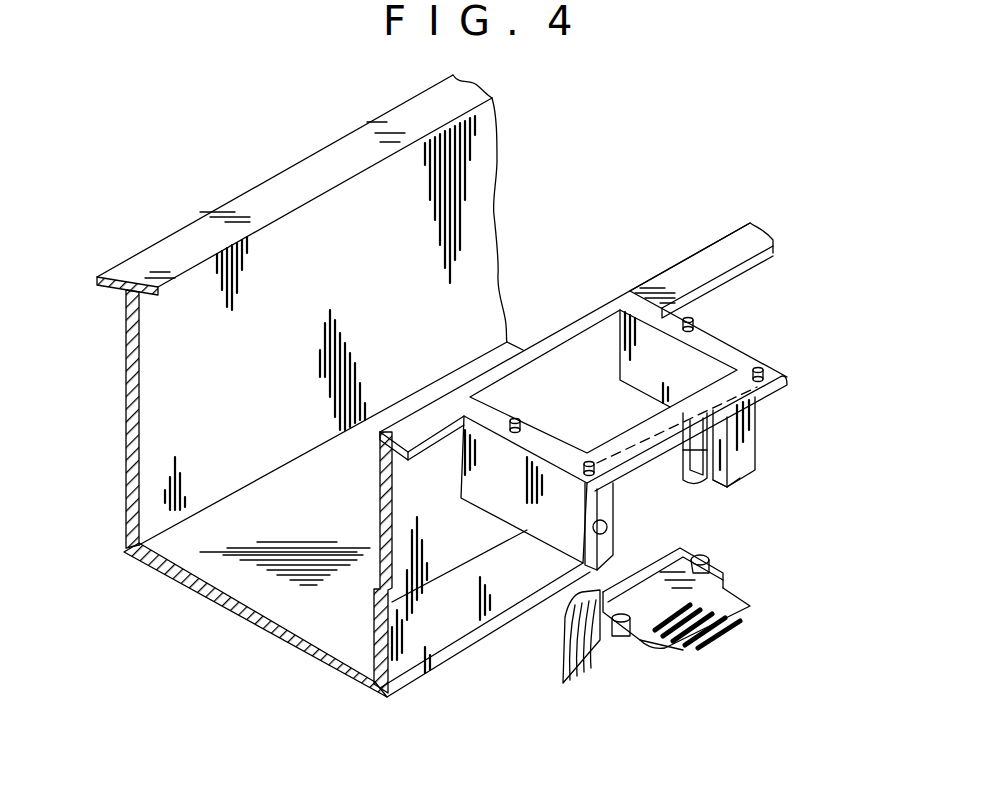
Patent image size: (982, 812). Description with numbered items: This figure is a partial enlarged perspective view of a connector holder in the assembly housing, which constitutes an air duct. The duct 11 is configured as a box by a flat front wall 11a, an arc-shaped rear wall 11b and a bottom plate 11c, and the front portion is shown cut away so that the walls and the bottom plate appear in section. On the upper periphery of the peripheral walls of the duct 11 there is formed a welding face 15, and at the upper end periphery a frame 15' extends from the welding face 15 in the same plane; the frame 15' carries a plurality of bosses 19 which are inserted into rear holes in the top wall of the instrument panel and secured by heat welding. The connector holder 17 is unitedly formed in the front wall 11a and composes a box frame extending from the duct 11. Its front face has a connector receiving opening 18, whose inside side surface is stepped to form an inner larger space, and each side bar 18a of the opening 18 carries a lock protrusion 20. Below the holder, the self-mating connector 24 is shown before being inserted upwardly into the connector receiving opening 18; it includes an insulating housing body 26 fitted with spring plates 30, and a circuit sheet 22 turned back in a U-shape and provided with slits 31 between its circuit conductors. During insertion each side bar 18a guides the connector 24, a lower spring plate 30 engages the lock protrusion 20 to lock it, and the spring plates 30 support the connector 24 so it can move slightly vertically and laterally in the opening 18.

The duct 11 is at (495, 183).
The front wall 11a is at (400, 548).
The rear wall 11b is at (124, 453).
The bottom plate 11c is at (225, 575).
The welding face 15 is at (435, 192).
The frame 15' is at (615, 357).
The connector holder 17 is at (762, 433).
The connector receiving opening 18 is at (652, 486).
The side bar 18a is at (753, 472).
The boss 19 is at (525, 418).
The lock protrusion 20 is at (730, 487).
The circuit sheet 22 is at (567, 657).
The self-mating connector 24 is at (695, 657).
The insulating housing body 26 is at (728, 590).
The spring plate 30 is at (712, 560).
The slit 31 is at (598, 645).